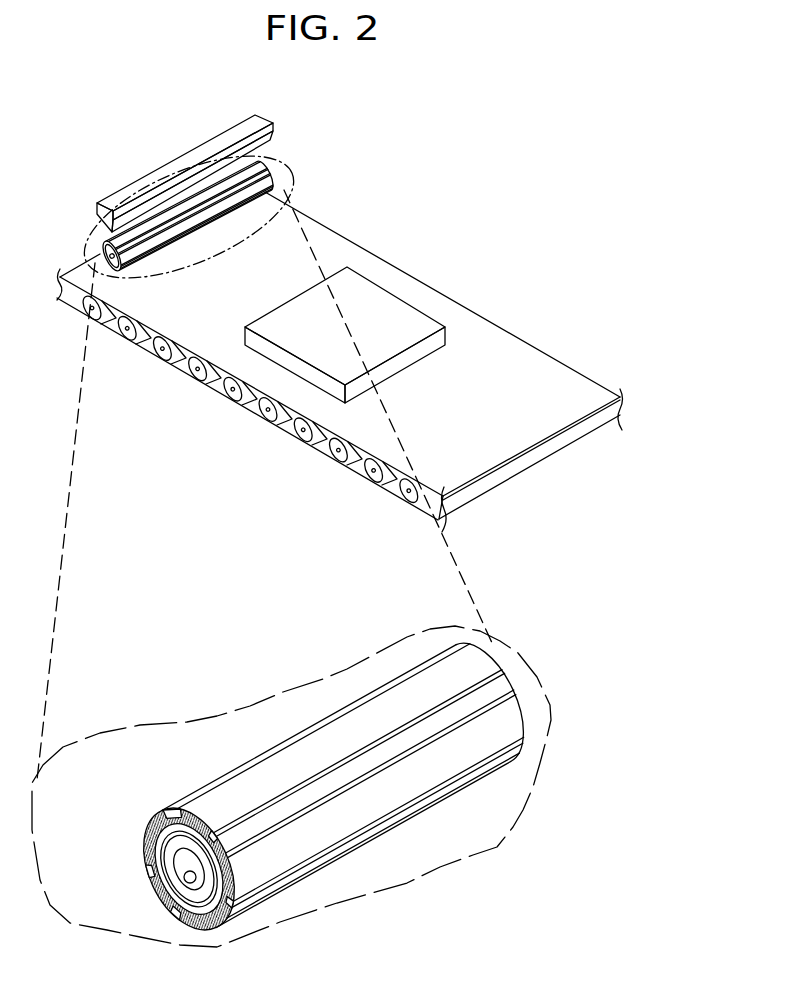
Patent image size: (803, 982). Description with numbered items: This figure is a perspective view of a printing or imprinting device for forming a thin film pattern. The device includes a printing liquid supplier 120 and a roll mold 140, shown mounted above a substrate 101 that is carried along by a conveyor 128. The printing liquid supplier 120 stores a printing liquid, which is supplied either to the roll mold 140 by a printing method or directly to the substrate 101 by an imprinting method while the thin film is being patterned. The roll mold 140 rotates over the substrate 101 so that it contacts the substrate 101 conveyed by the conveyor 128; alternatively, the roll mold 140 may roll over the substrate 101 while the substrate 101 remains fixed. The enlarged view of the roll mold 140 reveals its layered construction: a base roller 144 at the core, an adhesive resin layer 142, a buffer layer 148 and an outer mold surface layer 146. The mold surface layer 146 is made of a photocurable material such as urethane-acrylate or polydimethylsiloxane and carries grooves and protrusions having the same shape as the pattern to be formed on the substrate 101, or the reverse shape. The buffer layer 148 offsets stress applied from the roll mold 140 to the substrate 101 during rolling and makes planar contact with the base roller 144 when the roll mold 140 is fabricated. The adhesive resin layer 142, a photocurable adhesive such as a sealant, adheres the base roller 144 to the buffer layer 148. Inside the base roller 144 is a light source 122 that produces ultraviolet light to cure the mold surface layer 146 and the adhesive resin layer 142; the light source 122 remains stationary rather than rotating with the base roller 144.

The substrate 101 is at (345, 298).
The printing liquid supplier 120 is at (260, 124).
The conveyor 128 is at (374, 489).
The roll mold 140 is at (273, 162).
The adhesive resin layer 142 is at (147, 837).
The base roller 144 is at (182, 870).
The mold surface layer 146 is at (187, 816).
The buffer layer 148 is at (158, 855).
The light source 122 is at (190, 882).